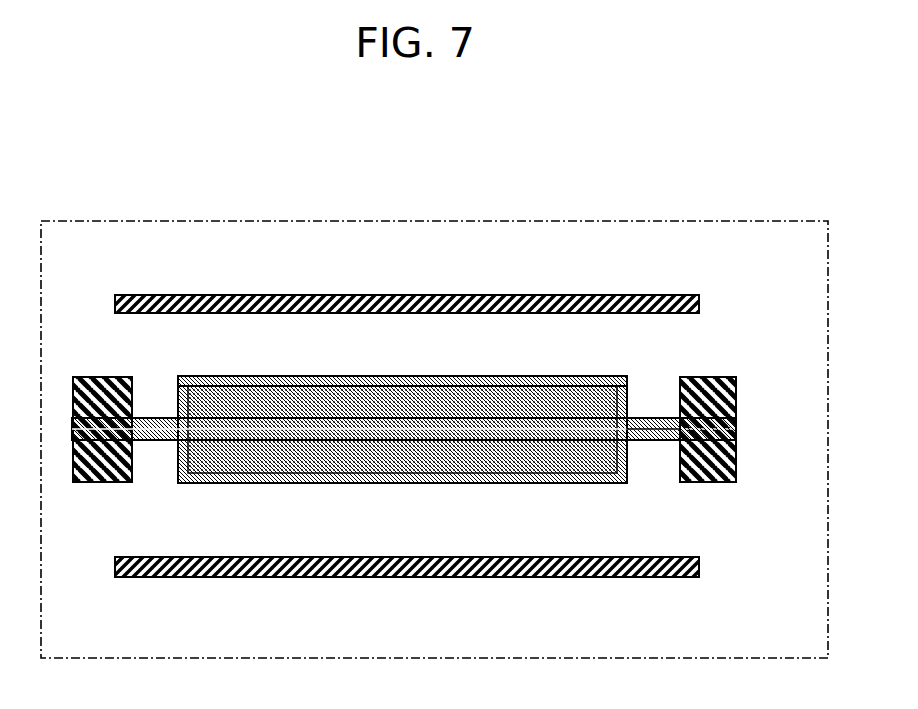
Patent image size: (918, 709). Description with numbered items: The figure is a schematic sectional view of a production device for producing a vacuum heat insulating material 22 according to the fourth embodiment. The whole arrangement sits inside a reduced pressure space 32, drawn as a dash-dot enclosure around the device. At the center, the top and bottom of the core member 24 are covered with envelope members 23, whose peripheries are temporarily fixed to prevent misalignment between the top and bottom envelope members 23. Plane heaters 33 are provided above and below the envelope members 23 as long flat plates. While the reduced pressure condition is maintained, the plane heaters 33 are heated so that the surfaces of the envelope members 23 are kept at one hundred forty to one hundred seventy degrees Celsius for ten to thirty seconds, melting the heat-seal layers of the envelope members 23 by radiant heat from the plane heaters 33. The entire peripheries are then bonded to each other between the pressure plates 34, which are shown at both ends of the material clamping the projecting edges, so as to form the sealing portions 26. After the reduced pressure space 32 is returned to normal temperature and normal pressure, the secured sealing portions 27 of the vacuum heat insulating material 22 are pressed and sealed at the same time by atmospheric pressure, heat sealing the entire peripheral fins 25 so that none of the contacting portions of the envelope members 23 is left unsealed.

The vacuum heat insulating material 22 is at (203, 365).
The envelope member 23 is at (543, 378).
The core member 24 is at (438, 440).
The peripheral fin 25 is at (653, 455).
The sealing portion 26 is at (738, 422).
The secured sealing portion 27 is at (662, 420).
The reduced pressure space 32 is at (656, 241).
The plane heater 33 is at (482, 295).
The pressure plate 34 is at (718, 376).